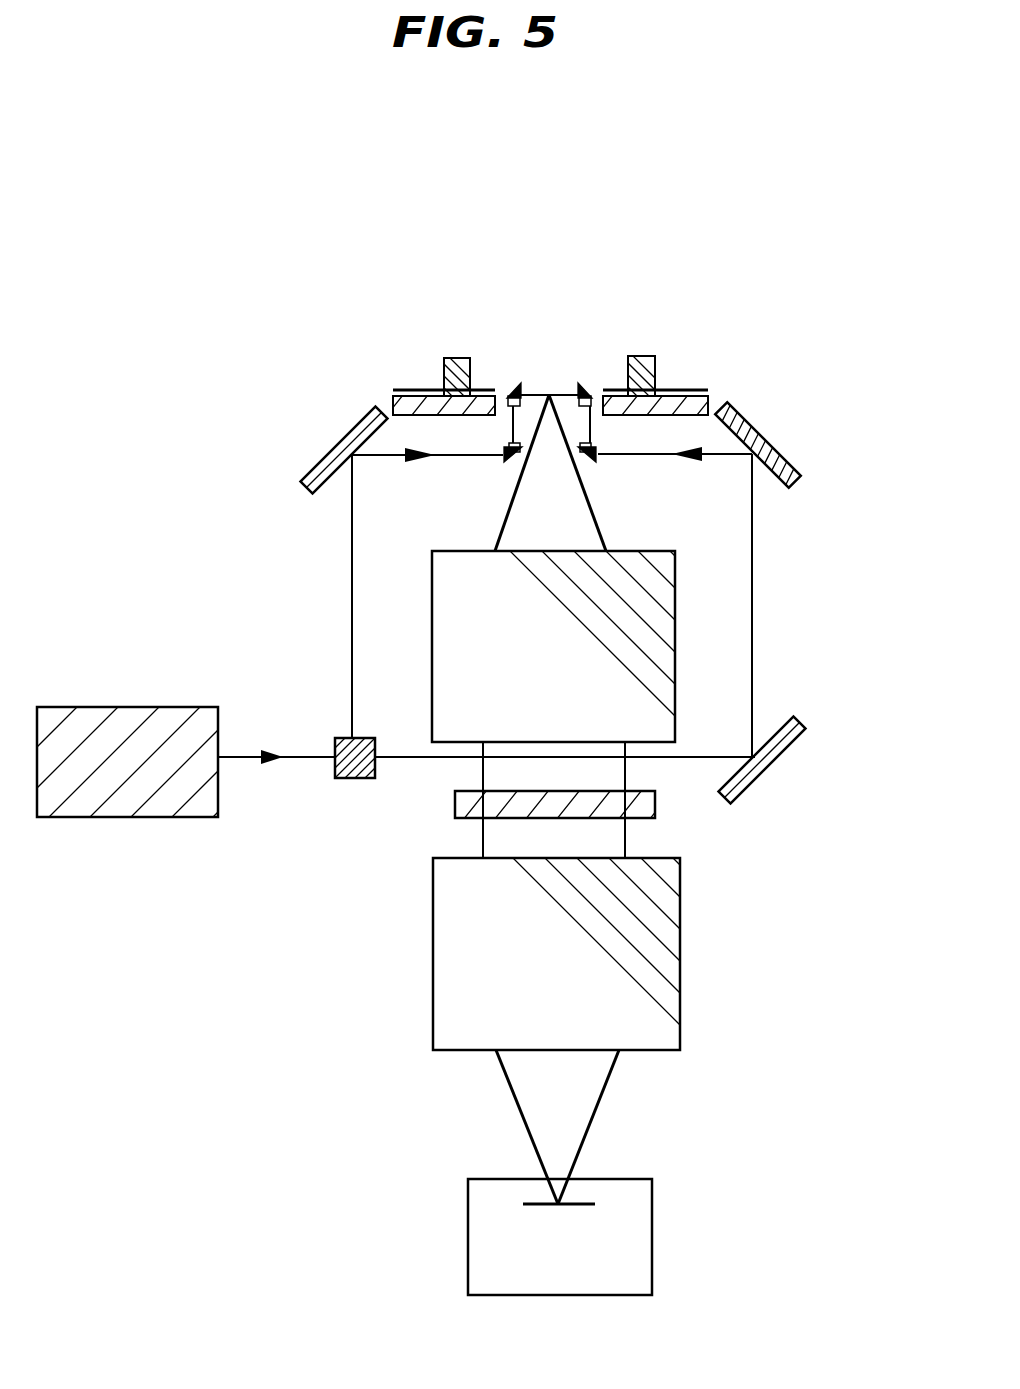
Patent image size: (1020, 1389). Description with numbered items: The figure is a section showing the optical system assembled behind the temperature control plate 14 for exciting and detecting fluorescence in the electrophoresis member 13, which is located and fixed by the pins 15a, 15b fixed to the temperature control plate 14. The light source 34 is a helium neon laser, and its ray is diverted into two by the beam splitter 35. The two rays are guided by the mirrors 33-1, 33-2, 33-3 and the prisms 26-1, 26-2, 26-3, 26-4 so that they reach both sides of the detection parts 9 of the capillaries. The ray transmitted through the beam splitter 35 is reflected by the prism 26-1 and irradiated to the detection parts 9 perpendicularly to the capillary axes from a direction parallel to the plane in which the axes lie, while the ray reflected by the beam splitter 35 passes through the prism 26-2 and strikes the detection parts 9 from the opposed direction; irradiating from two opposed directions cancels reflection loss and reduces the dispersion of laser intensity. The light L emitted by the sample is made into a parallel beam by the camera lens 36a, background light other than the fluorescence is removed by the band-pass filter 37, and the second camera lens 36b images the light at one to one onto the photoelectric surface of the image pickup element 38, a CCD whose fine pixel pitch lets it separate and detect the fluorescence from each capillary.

The electrophoresis member 13 is at (492, 389).
The detection parts 9 is at (549, 394).
The prism 26-1 is at (586, 390).
The prism 26-2 is at (517, 392).
The prism 26-3 is at (503, 456).
The prism 26-4 is at (594, 458).
The pin 15a is at (650, 355).
The pin 15b is at (445, 362).
The temperature control plate 14 is at (712, 395).
The mirror 33-1 is at (328, 448).
The mirror 33-2 is at (785, 766).
The mirror 33-3 is at (775, 430).
The light L is at (597, 538).
The camera lens 36a is at (676, 668).
The second camera lens 36b is at (676, 965).
The band-pass filter 37 is at (656, 808).
The light source 34 is at (120, 812).
The beam splitter 35 is at (340, 787).
The image pickup element 38 is at (640, 1240).